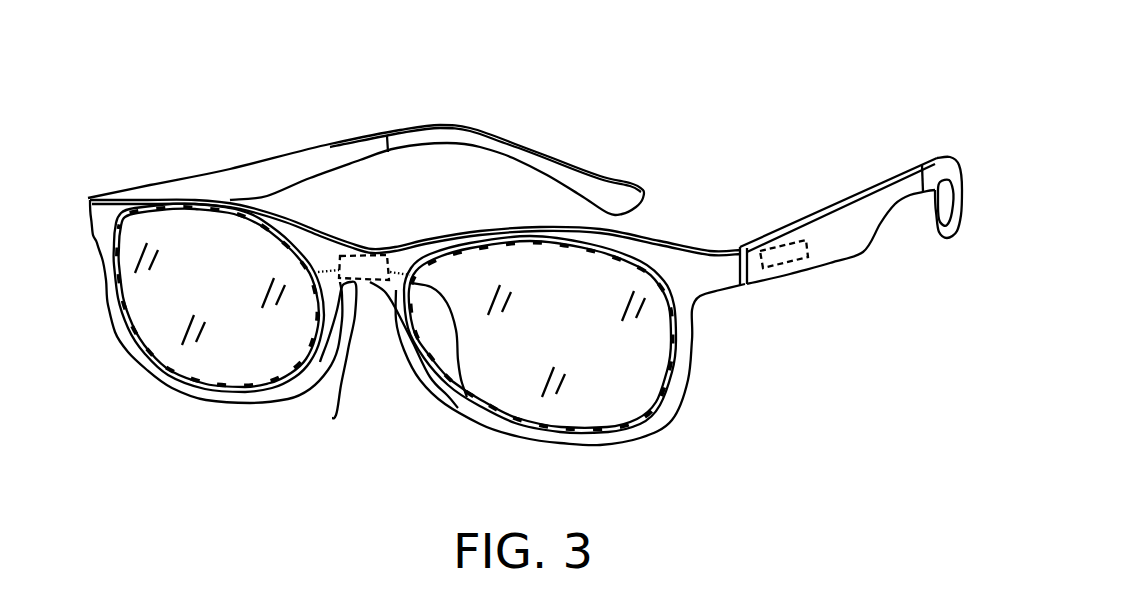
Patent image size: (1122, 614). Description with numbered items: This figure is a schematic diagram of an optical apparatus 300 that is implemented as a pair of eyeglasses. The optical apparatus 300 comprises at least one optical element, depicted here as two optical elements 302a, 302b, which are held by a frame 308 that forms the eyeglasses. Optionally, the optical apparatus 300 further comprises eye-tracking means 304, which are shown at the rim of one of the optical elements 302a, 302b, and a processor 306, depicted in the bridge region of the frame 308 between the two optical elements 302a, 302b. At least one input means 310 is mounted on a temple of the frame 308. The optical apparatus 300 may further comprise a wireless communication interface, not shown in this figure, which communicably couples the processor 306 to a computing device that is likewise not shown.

The optical apparatus 300 is at (723, 103).
The optical element 302a is at (487, 373).
The optical element 302b is at (247, 353).
The eye-tracking means 304 is at (677, 309).
The processor 306 is at (367, 281).
The frame 308 is at (190, 203).
The input means 310 is at (782, 246).